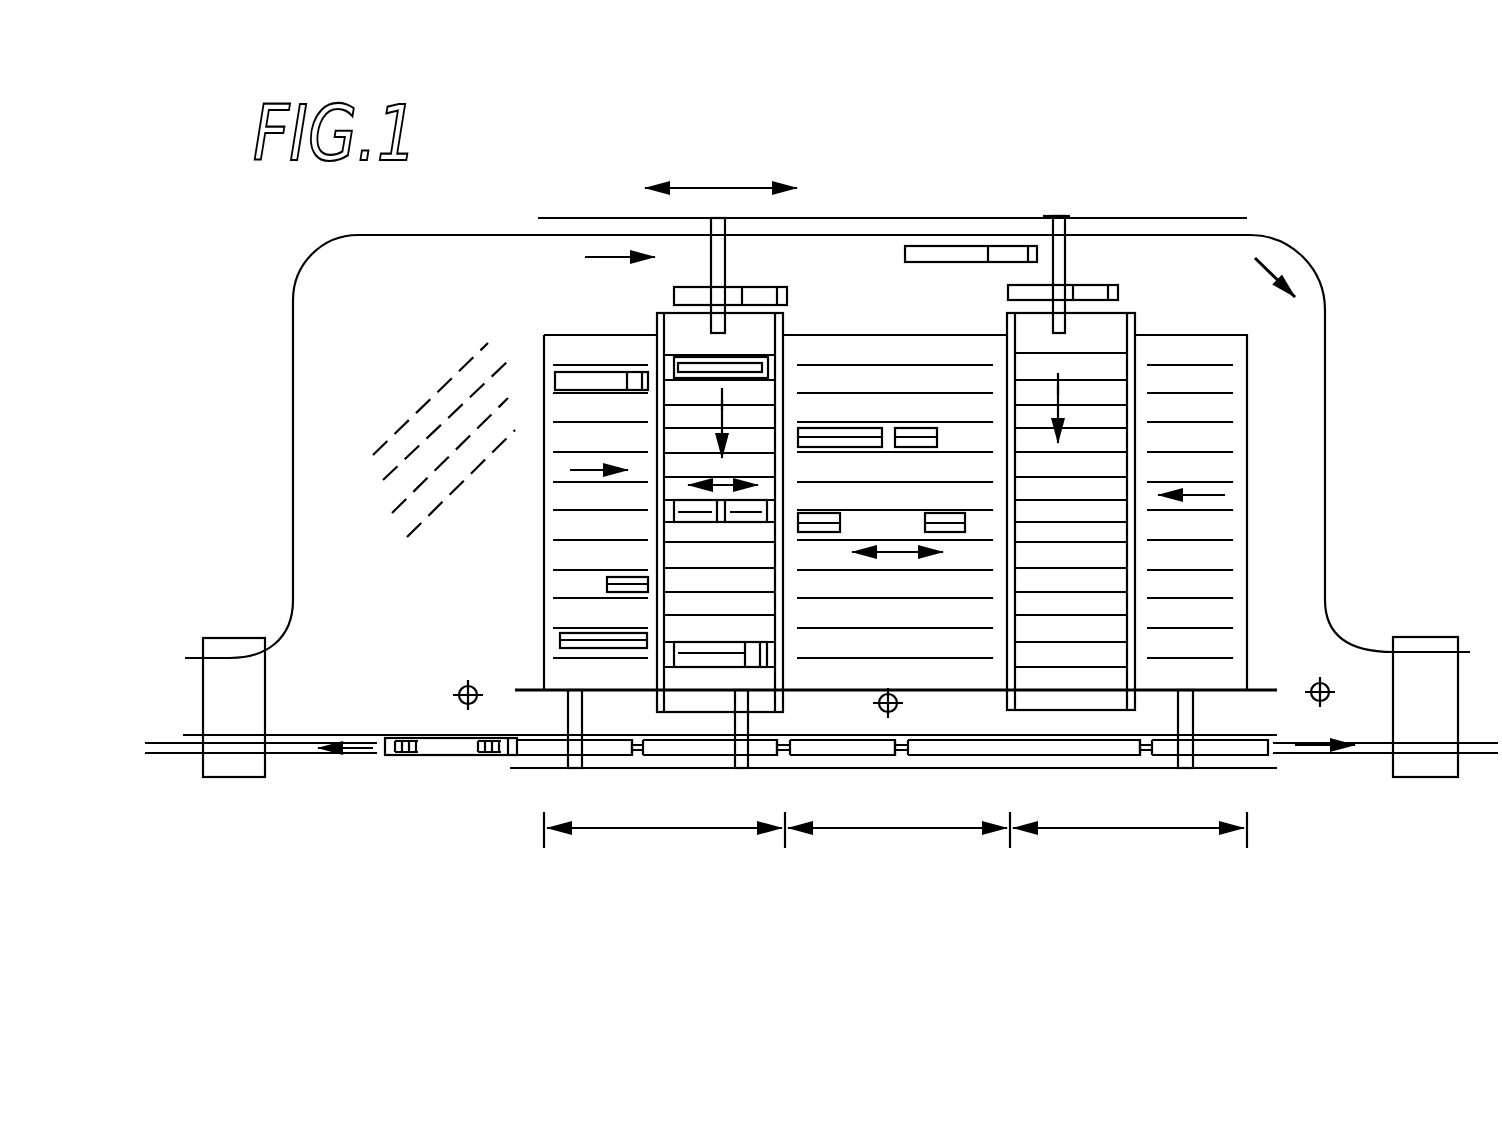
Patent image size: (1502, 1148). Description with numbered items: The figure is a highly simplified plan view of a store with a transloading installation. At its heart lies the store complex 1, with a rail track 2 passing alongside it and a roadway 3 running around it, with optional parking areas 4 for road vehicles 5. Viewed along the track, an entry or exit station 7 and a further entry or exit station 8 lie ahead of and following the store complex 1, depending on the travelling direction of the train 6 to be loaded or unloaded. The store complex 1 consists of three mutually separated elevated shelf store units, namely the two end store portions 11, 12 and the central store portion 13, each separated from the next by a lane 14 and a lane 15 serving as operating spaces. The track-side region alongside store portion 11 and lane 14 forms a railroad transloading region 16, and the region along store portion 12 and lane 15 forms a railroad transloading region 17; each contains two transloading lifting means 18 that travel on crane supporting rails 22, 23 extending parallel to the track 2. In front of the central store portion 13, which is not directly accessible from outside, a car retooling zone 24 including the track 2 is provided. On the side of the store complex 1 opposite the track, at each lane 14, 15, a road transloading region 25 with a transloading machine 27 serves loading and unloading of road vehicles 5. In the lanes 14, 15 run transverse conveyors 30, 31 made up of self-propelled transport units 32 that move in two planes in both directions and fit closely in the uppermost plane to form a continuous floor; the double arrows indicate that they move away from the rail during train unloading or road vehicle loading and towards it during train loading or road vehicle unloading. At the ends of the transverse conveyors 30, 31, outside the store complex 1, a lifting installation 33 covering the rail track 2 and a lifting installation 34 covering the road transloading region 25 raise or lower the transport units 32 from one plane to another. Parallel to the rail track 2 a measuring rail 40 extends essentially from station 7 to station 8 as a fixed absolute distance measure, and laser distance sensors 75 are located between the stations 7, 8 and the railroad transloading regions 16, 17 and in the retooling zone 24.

The store complex 1 is at (1292, 340).
The rail track 2 is at (292, 760).
The roadway 3 is at (1205, 250).
The parking areas 4 is at (425, 375).
The road vehicles 5 is at (1088, 285).
The train 6 is at (428, 759).
The entry or exit station 7 is at (213, 784).
The entry or exit station 8 is at (1418, 784).
The end store portion 11 is at (560, 493).
The end store portion 12 is at (1225, 583).
The central store portion 13 is at (972, 643).
The lane 14 is at (680, 552).
The lane 15 is at (1120, 534).
The railroad transloading region 16 is at (668, 832).
The railroad transloading region 17 is at (1150, 830).
The transloading lifting means 18 is at (583, 716).
The crane supporting rail 22 is at (528, 690).
The crane supporting rail 23 is at (530, 770).
The car retooling zone 24 is at (905, 832).
The road transloading region 25 is at (712, 188).
The transloading machine 27 is at (727, 273).
The transverse conveyor 30 is at (778, 386).
The transverse conveyor 31 is at (1112, 372).
The transport unit 32 is at (765, 416).
The lifting installation 33 is at (780, 698).
The lifting installation 34 is at (655, 318).
The measuring rail 40 is at (306, 735).
The laser distance sensor 75 is at (457, 690).